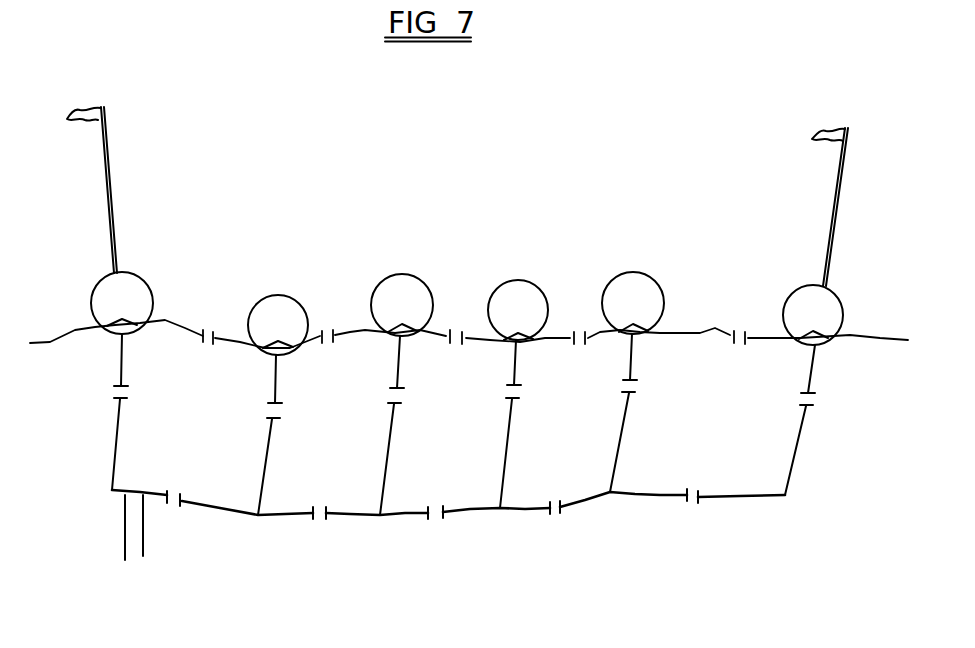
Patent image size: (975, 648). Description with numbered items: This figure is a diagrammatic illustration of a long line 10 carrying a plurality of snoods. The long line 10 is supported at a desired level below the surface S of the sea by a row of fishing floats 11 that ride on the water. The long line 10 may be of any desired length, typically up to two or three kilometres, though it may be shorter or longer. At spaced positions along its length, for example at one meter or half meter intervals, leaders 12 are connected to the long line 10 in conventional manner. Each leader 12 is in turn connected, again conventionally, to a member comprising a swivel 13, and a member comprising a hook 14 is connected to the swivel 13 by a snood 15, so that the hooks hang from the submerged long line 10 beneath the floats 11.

The long line 10 is at (630, 496).
The fishing float 11 is at (374, 293).
The leader 12 is at (123, 515).
The swivel 13 is at (123, 526).
The hook 14 is at (118, 557).
The snood 15 is at (121, 546).
The surface of the sea S is at (867, 338).